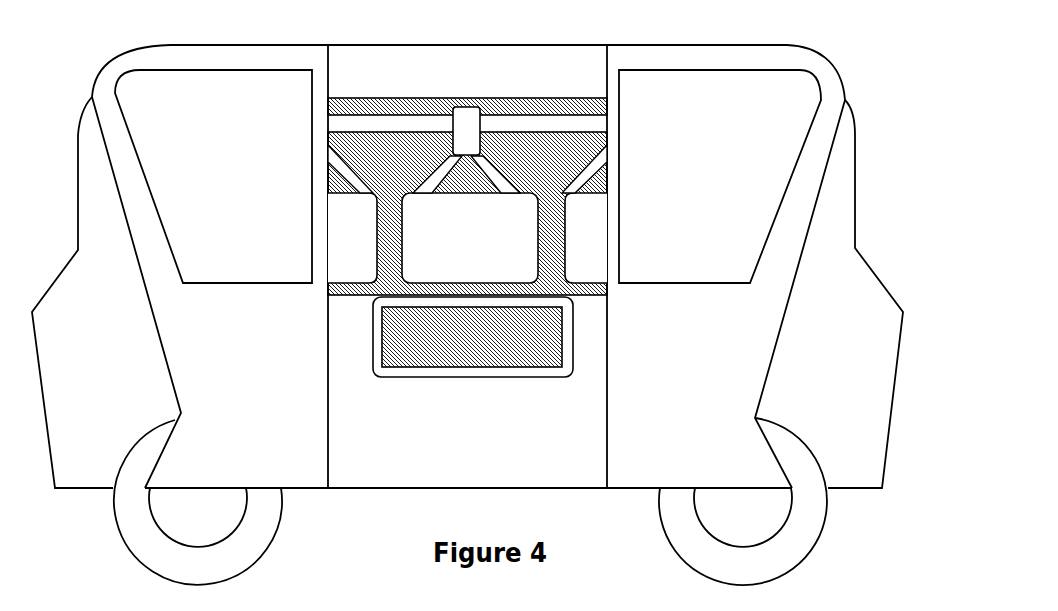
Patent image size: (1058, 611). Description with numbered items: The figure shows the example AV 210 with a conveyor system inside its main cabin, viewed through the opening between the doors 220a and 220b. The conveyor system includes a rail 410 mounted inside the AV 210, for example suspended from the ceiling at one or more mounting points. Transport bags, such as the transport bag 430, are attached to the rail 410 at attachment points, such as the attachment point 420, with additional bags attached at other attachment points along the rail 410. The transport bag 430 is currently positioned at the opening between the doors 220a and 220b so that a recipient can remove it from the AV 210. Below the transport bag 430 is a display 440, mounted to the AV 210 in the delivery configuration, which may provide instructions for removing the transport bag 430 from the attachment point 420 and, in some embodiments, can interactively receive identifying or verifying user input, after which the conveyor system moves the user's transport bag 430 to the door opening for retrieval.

The AV 210 is at (790, 43).
The door 220a is at (170, 53).
The door 220b is at (677, 53).
The rail 410 is at (370, 122).
The attachment point 420 is at (472, 117).
The transport bag 430 is at (523, 251).
The display 440 is at (547, 355).